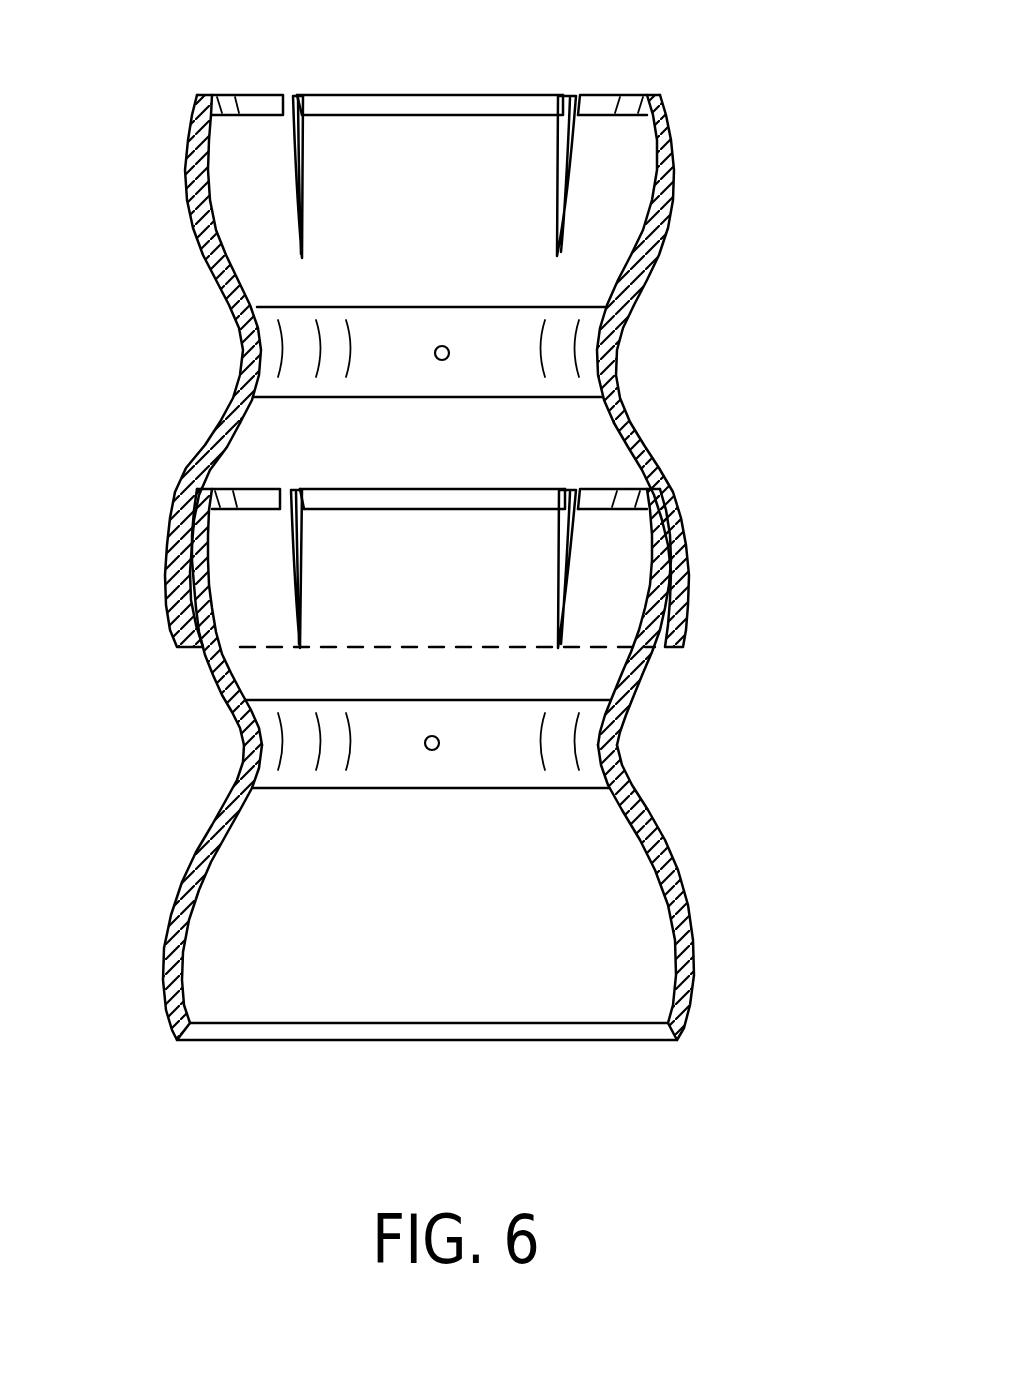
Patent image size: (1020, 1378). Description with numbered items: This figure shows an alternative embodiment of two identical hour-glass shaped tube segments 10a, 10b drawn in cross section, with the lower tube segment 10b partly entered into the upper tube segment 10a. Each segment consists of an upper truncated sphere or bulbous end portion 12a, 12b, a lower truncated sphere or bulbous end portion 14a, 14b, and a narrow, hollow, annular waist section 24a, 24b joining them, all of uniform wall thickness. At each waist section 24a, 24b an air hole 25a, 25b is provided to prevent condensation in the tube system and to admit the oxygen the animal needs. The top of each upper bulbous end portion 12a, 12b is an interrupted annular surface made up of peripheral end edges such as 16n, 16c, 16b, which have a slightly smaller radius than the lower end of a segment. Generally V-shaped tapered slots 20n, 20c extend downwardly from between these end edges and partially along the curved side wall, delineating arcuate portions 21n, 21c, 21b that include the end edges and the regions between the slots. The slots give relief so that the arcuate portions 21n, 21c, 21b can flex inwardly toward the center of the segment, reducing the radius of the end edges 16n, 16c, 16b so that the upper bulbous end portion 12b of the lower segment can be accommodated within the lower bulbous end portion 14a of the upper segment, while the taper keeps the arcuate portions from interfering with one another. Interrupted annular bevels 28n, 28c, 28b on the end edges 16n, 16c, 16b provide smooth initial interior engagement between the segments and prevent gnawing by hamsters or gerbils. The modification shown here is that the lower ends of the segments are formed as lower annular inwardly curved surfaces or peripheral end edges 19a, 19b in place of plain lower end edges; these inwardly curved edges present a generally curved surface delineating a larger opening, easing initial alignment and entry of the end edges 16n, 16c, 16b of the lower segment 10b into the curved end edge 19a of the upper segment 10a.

The tube segment 10a is at (488, 371).
The tube segment 10b is at (483, 803).
The upper truncated sphere or bulbous end portion 12a is at (672, 182).
The upper truncated sphere or bulbous end portion 12b is at (657, 585).
The lower truncated sphere or bulbous end portion 14a is at (690, 552).
The lower truncated sphere or bulbous end portion 14b is at (688, 923).
The interrupted upper annular surface or peripheral end edge 16n is at (236, 98).
The interrupted upper annular surface or peripheral end edge 16c is at (338, 96).
The interrupted upper annular surface or peripheral end edge 16b is at (612, 95).
The lower annular inwardly curved surface or peripheral end edge 19a is at (332, 648).
The lower annular inwardly curved surface or peripheral end edge 19b is at (553, 1040).
The tapered slot 20n is at (302, 180).
The tapered slot 20c is at (560, 182).
The arcuate portion 21n is at (232, 187).
The arcuate portion 21c is at (481, 157).
The arcuate portion 21b is at (620, 182).
The annular intersection or narrow hollow annular waist section 24a is at (247, 348).
The annular intersection or narrow hollow annular waist section 24b is at (238, 758).
The air hole 25a is at (446, 346).
The air hole 25b is at (437, 750).
The interrupted annular bevel 28n is at (212, 96).
The interrupted annular bevel 28c is at (389, 100).
The interrupted annular bevel 28b is at (650, 97).